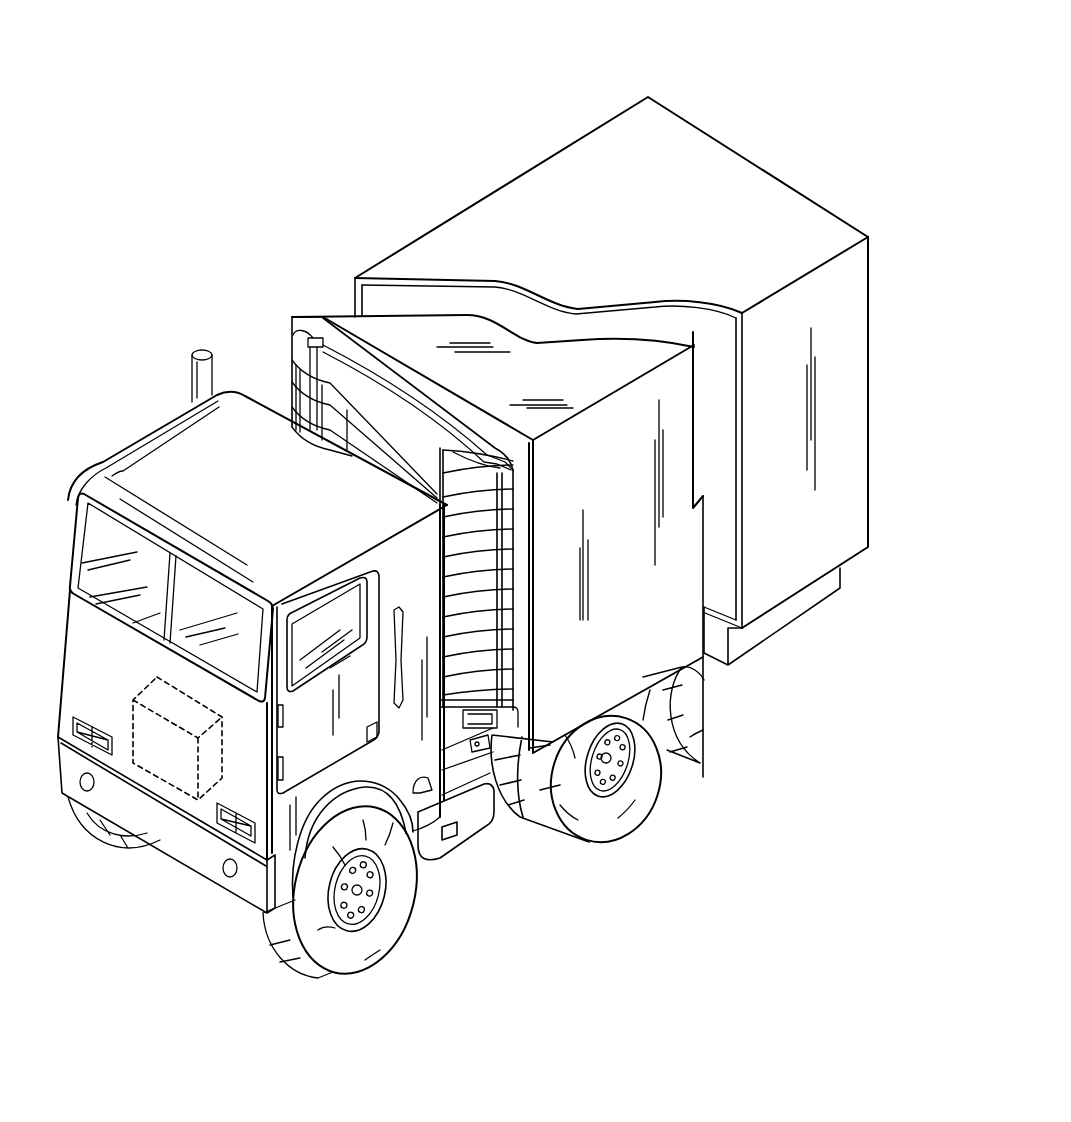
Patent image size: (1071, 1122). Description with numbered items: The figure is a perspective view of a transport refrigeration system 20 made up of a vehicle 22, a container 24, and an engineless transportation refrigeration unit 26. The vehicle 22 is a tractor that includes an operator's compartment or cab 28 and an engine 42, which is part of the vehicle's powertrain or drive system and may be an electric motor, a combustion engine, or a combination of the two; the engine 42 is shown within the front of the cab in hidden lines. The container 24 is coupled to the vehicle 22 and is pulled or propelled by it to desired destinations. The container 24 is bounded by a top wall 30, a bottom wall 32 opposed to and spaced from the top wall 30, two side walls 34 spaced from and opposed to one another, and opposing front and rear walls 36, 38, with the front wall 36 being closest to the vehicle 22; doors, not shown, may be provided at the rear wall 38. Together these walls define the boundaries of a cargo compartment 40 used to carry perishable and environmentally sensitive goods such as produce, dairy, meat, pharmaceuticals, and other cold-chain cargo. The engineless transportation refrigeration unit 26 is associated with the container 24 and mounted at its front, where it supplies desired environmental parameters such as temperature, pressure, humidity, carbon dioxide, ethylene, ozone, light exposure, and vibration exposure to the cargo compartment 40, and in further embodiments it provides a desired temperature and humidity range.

The transport refrigeration system 20 is at (197, 84).
The vehicle 22 is at (117, 467).
The container 24 is at (474, 187).
The engineless transportation refrigeration unit 26 is at (318, 334).
The cab 28 is at (342, 630).
The top wall 30 is at (582, 150).
The bottom wall 32 is at (850, 555).
The side walls 34 is at (857, 330).
The front wall 36 is at (488, 432).
The rear wall 38 is at (820, 197).
The cargo compartment 40 is at (655, 327).
The engine 42 is at (167, 783).